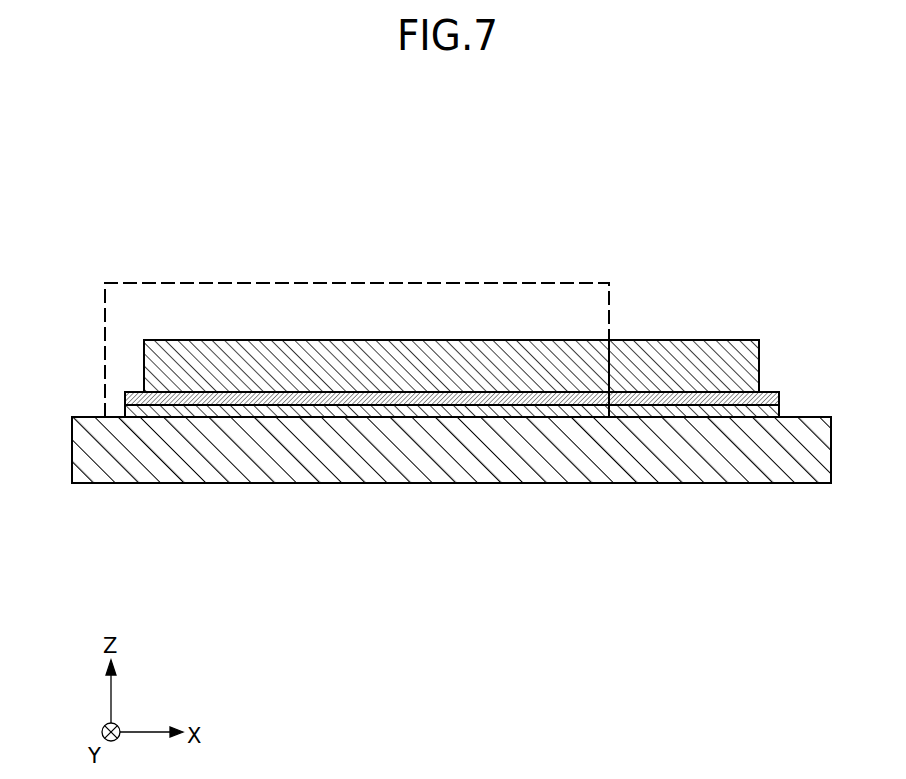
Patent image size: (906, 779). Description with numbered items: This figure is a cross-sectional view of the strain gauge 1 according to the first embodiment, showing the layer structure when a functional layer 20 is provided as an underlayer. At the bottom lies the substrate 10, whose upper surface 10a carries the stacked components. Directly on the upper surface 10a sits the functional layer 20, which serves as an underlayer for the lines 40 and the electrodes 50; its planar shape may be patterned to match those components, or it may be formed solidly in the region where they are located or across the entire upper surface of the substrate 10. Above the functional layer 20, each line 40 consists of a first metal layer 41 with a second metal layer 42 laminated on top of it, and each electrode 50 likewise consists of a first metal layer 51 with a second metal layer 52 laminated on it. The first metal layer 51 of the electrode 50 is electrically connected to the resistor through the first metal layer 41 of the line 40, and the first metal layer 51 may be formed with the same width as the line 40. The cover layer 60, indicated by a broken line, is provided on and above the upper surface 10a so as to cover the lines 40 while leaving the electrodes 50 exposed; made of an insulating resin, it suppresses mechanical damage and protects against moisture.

The strain gauge 1 is at (28, 118).
The substrate 10 is at (723, 484).
The upper surface of substrate 10a is at (807, 417).
The functional layer 20 is at (572, 418).
The line 40 is at (367, 259).
The first metal layer 41 is at (609, 384).
The second metal layer 42 is at (144, 318).
The electrode 50 is at (694, 259).
The first metal layer 51 is at (779, 388).
The second metal layer 52 is at (612, 318).
The cover layer 60 is at (498, 281).